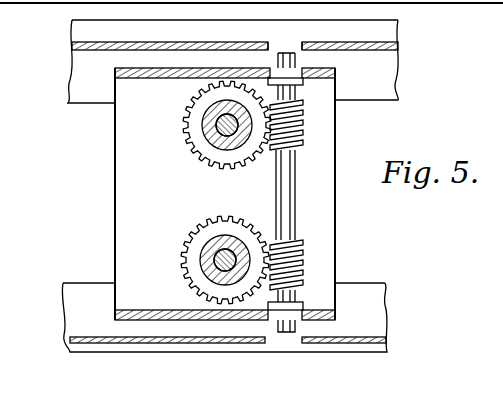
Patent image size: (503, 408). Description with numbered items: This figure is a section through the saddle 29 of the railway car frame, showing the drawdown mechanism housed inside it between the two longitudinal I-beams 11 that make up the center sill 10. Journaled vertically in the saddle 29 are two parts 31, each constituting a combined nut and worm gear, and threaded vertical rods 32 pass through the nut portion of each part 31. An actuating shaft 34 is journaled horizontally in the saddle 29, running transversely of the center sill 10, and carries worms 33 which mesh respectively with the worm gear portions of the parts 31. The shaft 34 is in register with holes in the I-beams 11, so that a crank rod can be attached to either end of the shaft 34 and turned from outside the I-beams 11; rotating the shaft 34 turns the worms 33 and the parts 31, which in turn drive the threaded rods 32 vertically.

The center sill 10 is at (383, 63).
The longitudinal I-beams 11 is at (290, 42).
The saddle 29 is at (109, 216).
The combined nut and worm gear parts 31 is at (190, 110).
The threaded vertical rods 32 is at (218, 125).
The worms 33 is at (305, 133).
The actuating shaft 34 is at (288, 175).